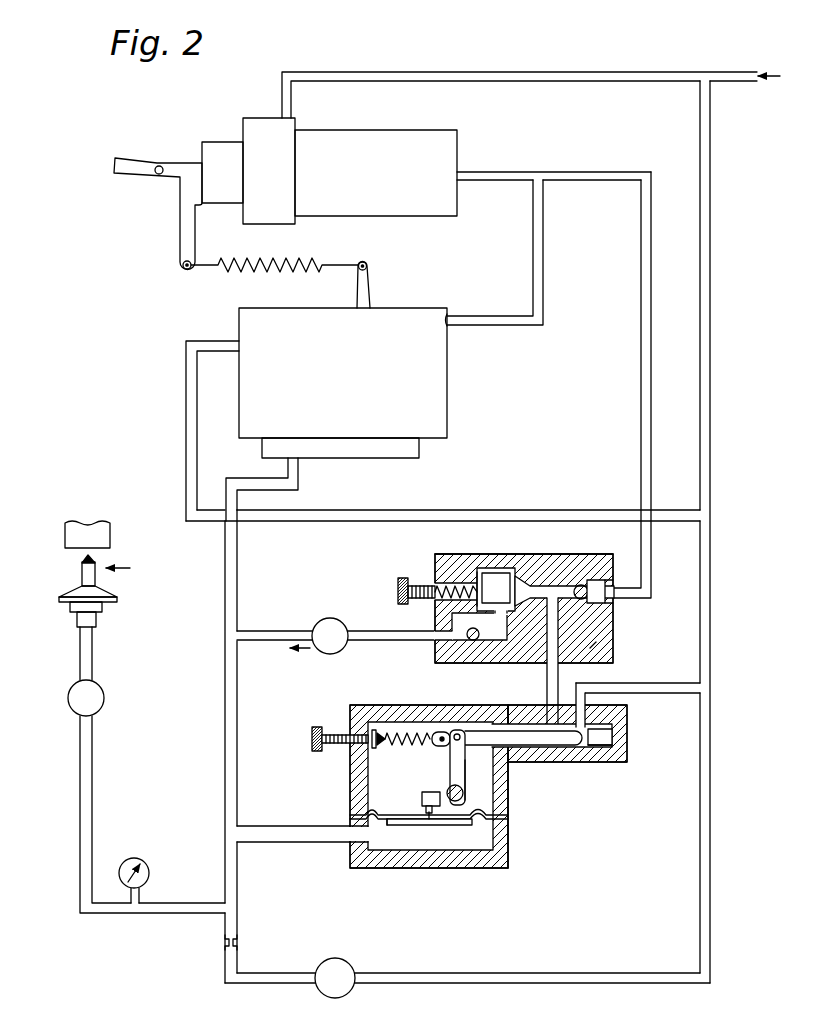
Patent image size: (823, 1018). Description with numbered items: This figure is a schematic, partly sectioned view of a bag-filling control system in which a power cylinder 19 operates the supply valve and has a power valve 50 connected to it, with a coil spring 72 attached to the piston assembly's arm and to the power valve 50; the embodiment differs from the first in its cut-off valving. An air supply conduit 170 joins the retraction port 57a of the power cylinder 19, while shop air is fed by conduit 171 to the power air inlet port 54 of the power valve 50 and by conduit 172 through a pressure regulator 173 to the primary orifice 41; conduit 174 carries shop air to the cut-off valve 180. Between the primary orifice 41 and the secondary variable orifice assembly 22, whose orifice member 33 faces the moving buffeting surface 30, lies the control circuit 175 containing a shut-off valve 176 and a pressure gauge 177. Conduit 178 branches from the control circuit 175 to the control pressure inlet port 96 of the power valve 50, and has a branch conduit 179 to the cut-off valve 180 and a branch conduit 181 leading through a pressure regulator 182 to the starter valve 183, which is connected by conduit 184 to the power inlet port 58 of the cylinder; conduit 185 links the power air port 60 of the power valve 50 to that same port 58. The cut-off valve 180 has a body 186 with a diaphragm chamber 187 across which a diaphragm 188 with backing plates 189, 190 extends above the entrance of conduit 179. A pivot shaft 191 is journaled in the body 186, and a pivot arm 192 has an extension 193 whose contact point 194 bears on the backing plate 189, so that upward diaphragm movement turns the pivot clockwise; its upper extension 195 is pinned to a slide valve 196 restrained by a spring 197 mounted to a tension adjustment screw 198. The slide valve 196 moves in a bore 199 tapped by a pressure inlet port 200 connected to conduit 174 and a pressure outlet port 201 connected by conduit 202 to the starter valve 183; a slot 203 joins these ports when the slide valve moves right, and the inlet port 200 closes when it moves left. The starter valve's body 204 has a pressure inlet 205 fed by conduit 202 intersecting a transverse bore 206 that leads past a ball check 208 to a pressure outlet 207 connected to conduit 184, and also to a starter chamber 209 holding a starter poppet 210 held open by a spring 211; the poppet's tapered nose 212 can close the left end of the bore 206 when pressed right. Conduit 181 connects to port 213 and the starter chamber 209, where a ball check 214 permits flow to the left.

The power cylinder 19 is at (385, 181).
The secondary variable orifice assembly 22 is at (130, 572).
The buffeting surface 30 is at (66, 554).
The orifice member 33 is at (80, 578).
The primary orifice 41 is at (224, 947).
The power valve 50 is at (355, 376).
The power air inlet port 54 is at (238, 343).
The retraction port 57a is at (296, 121).
The power inlet port 58 is at (460, 173).
The power air port 60 is at (447, 316).
The coil spring 72 is at (233, 270).
The control pressure inlet port 96 is at (290, 464).
The air supply conduit 170 is at (735, 72).
The conduit 171 is at (402, 519).
The conduit 172 is at (710, 660).
The pressure regulator 173 is at (352, 973).
The conduit 174 is at (630, 684).
The control circuit 175 is at (92, 770).
The shut-off valve 176 is at (104, 695).
The pressure gauge 177 is at (146, 868).
The conduit 178 is at (225, 611).
The branch conduit 179 is at (290, 831).
The cut-off valve 180 is at (512, 809).
The branch conduit 181 is at (292, 630).
The pressure regulator 182 is at (340, 610).
The starter valve 183 is at (531, 556).
The conduit 184 is at (641, 380).
The conduit 185 is at (541, 297).
The body 186 is at (507, 847).
The diaphragm chamber 187 is at (427, 848).
The diaphragm 188 is at (372, 822).
The backing plate 189 is at (368, 815).
The backing plate 190 is at (393, 826).
The pivot shaft 191 is at (465, 797).
The pivot arm 192 is at (470, 778).
The extension 193 is at (428, 795).
The contact point 194 is at (437, 812).
The upper extension 195 is at (452, 764).
The slide valve 196 is at (612, 738).
The spring 197 is at (400, 734).
The tension adjustment screw 198 is at (322, 730).
The bore 199 is at (600, 747).
The pressure inlet port 200 is at (610, 718).
The pressure outlet port 201 is at (548, 746).
The conduit 202 is at (547, 672).
The slot 203 is at (580, 700).
The valve body 204 is at (615, 627).
The pressure inlet 205 is at (590, 648).
The transverse bore 206 is at (584, 585).
The pressure outlet 207 is at (616, 598).
The ball check 208 is at (606, 585).
The starter chamber 209 is at (478, 572).
The starter poppet 210 is at (400, 580).
The spring 211 is at (425, 602).
The tapered nose 212 is at (520, 577).
The port 213 is at (445, 633).
The ball check 214 is at (470, 641).